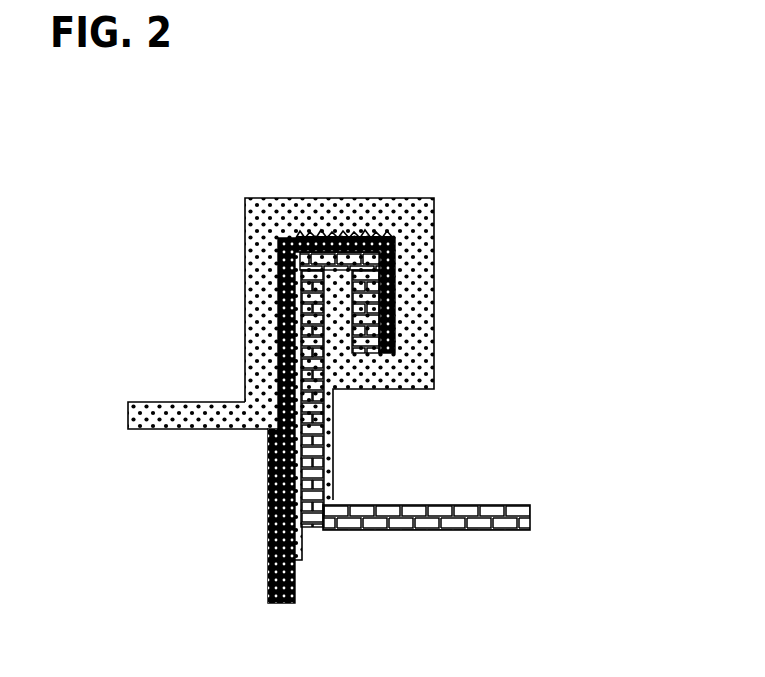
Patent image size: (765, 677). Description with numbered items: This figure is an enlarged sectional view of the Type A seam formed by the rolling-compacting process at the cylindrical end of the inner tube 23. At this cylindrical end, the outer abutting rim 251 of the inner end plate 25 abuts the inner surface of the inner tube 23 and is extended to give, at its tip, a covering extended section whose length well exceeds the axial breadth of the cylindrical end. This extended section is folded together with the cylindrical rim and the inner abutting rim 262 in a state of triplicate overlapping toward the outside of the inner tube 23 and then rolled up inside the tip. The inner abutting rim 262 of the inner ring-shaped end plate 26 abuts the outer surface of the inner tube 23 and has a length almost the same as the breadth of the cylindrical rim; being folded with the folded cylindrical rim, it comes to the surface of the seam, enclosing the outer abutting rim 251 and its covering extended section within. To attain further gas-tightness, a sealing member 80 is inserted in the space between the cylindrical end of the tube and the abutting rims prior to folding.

The sealing member 80 is at (344, 236).
The outer abutting rim 251 is at (384, 205).
The inner abutting rim 262 is at (395, 324).
The inner end plate 25 is at (181, 401).
The inner tube 23 is at (268, 512).
The inner ring-shaped end plate 26 is at (465, 531).